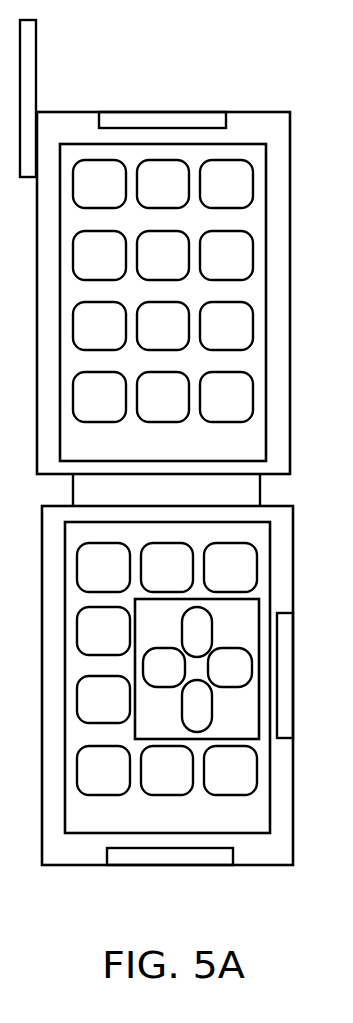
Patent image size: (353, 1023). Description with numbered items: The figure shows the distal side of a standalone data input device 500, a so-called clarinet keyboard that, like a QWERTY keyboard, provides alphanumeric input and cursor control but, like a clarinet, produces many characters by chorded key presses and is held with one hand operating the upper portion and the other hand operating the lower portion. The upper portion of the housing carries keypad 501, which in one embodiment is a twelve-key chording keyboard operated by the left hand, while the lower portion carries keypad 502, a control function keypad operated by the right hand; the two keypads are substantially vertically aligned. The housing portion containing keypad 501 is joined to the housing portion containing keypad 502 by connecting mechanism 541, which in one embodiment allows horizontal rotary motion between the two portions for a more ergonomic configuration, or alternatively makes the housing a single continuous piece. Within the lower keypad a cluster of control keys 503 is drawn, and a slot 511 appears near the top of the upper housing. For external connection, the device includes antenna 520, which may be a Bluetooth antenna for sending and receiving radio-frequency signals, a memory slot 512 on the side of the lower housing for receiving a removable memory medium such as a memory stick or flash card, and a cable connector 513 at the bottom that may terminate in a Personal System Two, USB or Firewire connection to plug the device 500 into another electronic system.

The input device 500 is at (315, 833).
The keypad 501 is at (264, 454).
The keypad 502 is at (268, 828).
The navigation key pad 503 is at (180, 735).
The speaker 511 is at (164, 107).
The memory slot 512 is at (299, 681).
The cable connector 513 is at (203, 871).
The antenna 520 is at (41, 82).
The connecting mechanism 541 is at (257, 500).